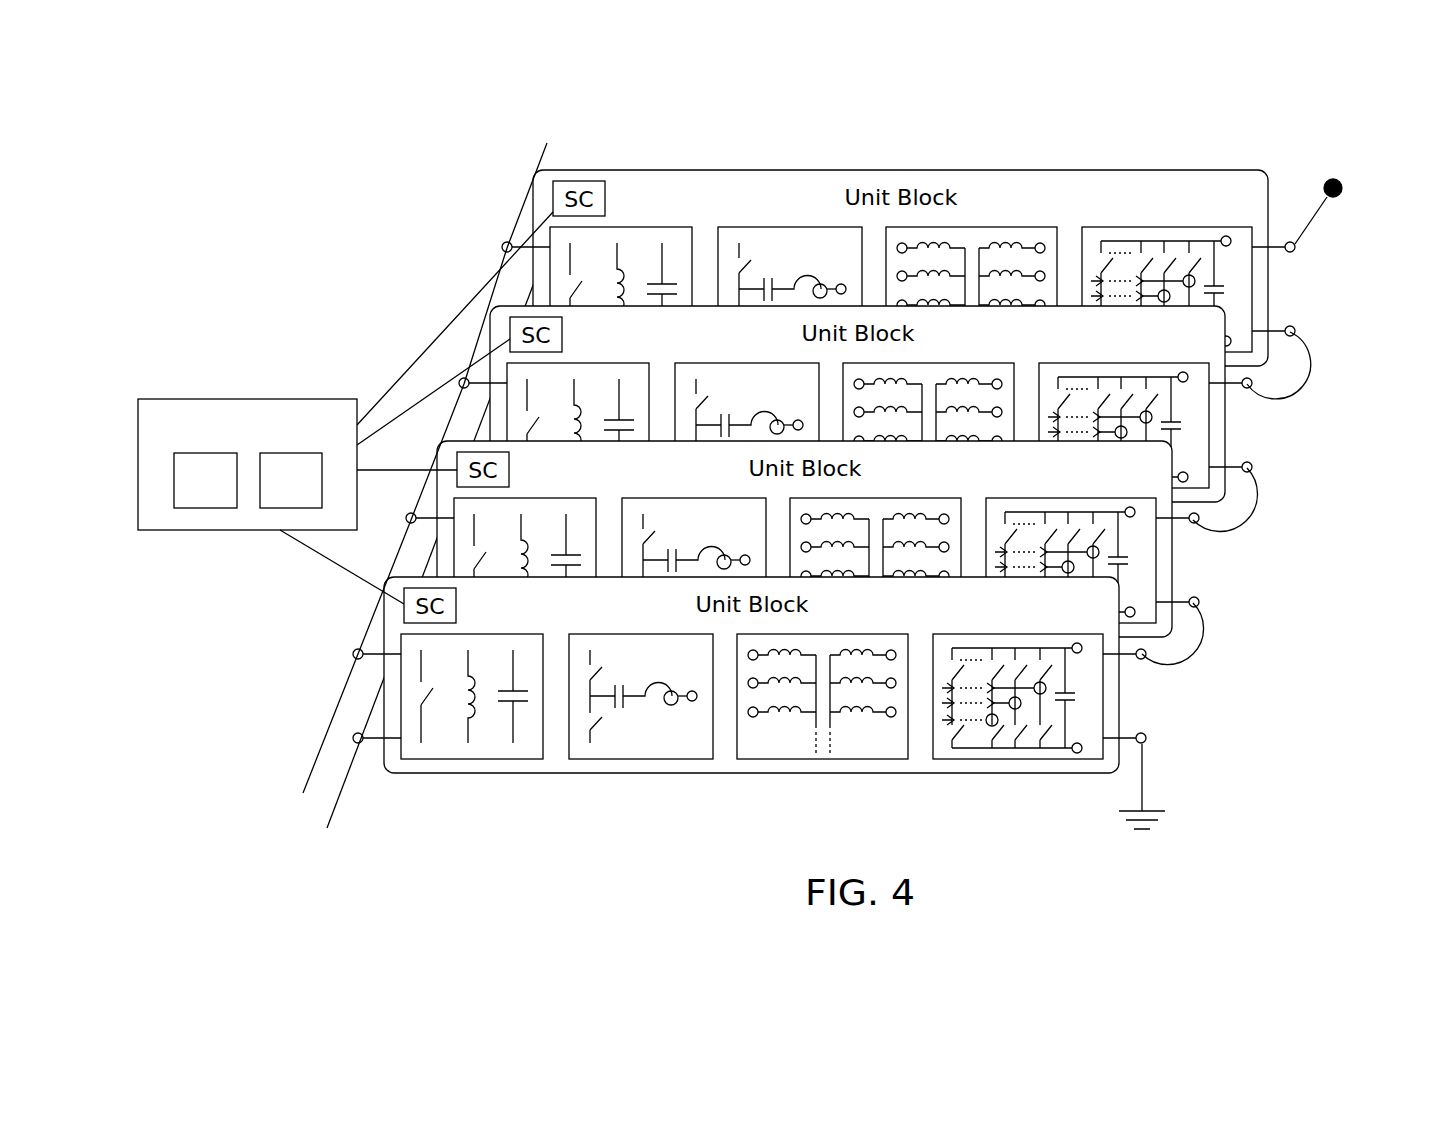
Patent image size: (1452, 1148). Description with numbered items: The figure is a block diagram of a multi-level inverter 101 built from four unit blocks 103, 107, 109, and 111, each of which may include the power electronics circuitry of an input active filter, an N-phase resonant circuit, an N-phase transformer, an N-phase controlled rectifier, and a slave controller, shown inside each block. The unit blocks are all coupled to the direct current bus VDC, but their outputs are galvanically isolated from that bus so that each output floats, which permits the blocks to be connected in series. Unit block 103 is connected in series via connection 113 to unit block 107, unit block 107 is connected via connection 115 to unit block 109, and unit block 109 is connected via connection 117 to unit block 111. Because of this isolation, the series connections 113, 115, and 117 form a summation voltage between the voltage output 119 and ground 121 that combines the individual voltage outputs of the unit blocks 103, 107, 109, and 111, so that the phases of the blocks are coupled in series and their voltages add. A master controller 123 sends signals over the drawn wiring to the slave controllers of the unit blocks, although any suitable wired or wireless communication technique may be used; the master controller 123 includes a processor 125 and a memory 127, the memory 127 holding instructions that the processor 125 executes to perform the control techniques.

The multi-level inverter 101 is at (492, 123).
The unit block 103 is at (1275, 290).
The unit block 107 is at (1232, 432).
The unit block 109 is at (1173, 565).
The unit block 111 is at (1122, 707).
The connection 113 is at (1308, 372).
The connection 115 is at (1262, 512).
The connection 117 is at (1197, 647).
The output voltage 119 is at (1313, 213).
The ground 121 is at (1147, 783).
The master controller 123 is at (345, 408).
The processor 125 is at (198, 508).
The memory 127 is at (267, 508).